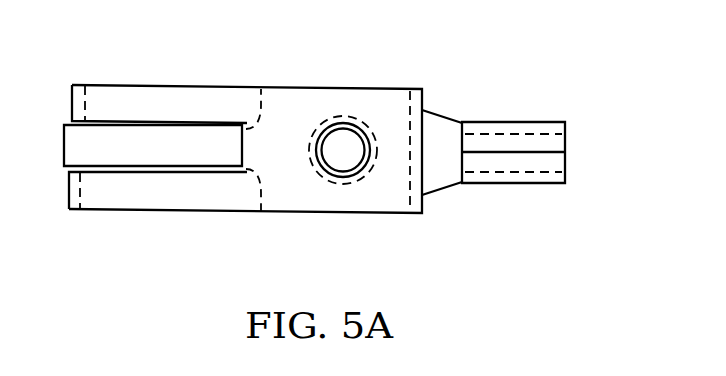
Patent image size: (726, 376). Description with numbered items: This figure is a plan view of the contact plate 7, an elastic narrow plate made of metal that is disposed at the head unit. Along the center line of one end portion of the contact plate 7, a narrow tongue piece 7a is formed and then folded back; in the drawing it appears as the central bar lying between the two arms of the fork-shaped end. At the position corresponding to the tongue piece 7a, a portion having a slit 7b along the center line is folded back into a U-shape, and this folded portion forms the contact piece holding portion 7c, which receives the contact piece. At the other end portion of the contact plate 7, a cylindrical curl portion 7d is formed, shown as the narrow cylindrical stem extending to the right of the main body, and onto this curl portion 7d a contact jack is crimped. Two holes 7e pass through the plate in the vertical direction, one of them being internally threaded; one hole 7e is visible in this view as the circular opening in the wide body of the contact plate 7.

The contact plate 7 is at (320, 145).
The tongue piece 7a is at (162, 143).
The slit 7b is at (108, 120).
The contact piece holding portion 7c is at (88, 192).
The curl portion 7d is at (538, 127).
The hole 7e is at (347, 125).